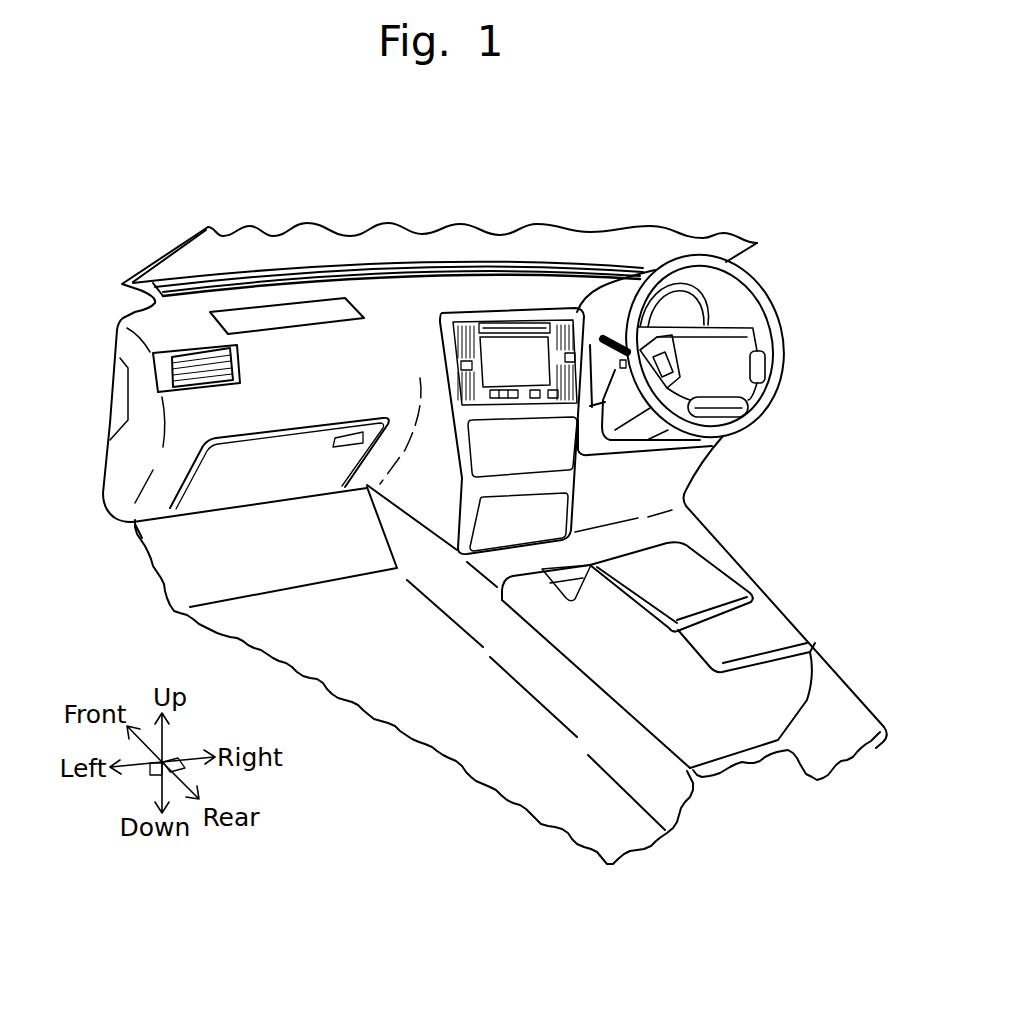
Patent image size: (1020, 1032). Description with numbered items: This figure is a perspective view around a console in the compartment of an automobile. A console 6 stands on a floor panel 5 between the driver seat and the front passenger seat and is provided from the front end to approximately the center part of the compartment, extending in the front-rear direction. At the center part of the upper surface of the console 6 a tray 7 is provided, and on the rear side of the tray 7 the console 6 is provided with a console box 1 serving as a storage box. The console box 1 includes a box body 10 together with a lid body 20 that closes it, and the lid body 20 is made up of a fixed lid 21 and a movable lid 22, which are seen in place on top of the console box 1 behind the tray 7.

The console box 1 is at (710, 534).
The floor panel 5 is at (378, 662).
The console 6 is at (560, 693).
The tray 7 is at (573, 598).
The box body 10 is at (745, 702).
The lid body 20 is at (740, 595).
The fixed lid 21 is at (762, 619).
The movable lid 22 is at (693, 575).